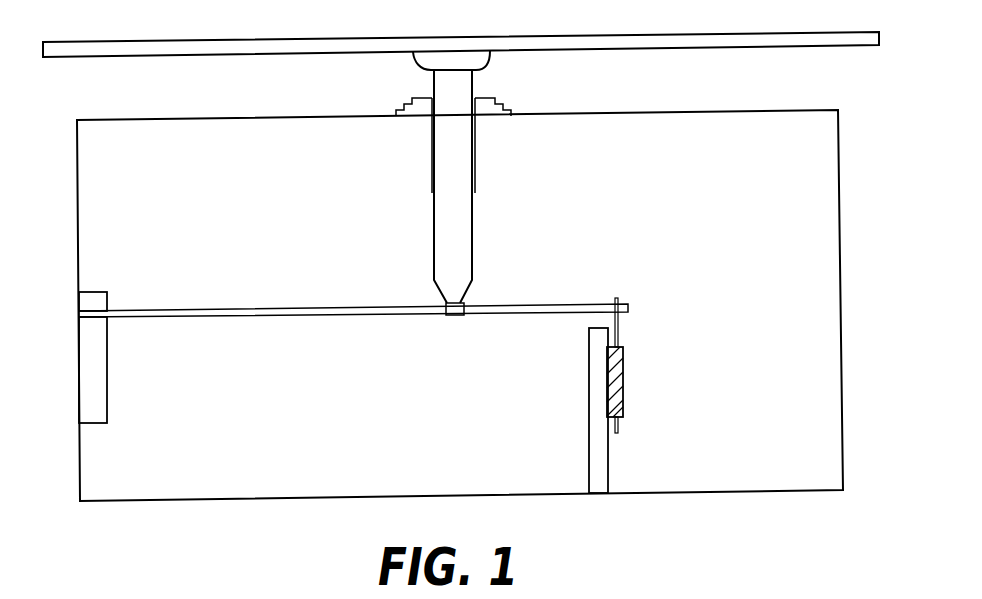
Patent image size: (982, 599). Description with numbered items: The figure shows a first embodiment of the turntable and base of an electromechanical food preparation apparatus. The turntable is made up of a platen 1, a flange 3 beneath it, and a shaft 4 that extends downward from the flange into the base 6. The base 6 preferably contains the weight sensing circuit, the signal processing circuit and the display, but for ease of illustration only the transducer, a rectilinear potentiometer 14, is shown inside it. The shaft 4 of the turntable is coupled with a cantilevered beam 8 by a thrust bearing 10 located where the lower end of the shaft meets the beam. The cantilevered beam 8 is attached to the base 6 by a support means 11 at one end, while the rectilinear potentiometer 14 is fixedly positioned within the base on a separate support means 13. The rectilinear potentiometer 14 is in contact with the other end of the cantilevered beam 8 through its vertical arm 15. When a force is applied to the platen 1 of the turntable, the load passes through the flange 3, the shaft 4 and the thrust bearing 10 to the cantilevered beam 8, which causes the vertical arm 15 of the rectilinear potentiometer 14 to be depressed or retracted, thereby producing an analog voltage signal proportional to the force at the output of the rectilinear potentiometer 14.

The platen 1 is at (627, 33).
The flange 3 is at (487, 61).
The shaft 4 is at (467, 241).
The base 6 is at (693, 112).
The cantilevered beam 8 is at (565, 303).
The thrust bearing 10 is at (455, 316).
The support means 11 is at (100, 393).
The support means 13 is at (592, 405).
The rectilinear potentiometer 14 is at (625, 373).
The vertical arm 15 is at (619, 329).